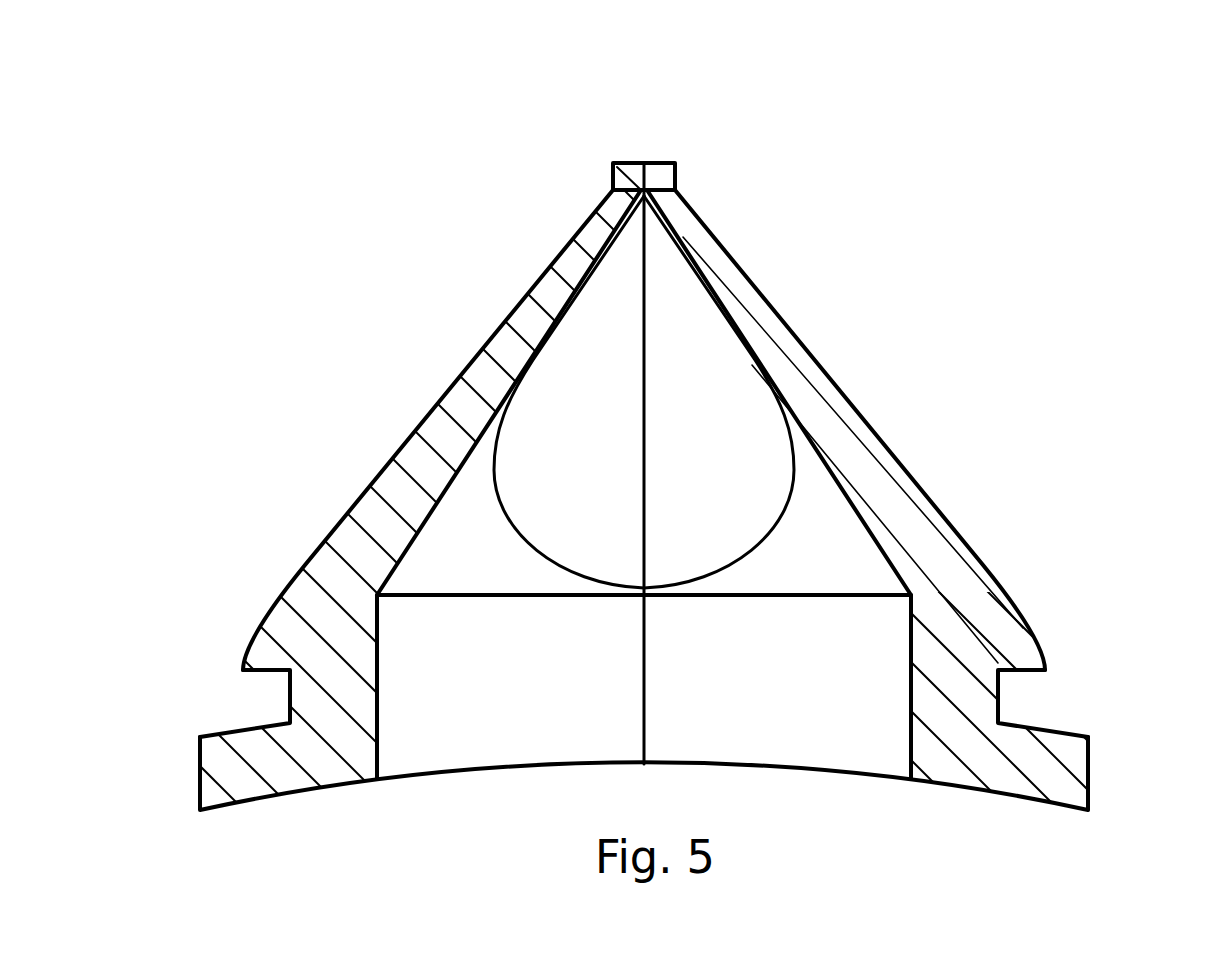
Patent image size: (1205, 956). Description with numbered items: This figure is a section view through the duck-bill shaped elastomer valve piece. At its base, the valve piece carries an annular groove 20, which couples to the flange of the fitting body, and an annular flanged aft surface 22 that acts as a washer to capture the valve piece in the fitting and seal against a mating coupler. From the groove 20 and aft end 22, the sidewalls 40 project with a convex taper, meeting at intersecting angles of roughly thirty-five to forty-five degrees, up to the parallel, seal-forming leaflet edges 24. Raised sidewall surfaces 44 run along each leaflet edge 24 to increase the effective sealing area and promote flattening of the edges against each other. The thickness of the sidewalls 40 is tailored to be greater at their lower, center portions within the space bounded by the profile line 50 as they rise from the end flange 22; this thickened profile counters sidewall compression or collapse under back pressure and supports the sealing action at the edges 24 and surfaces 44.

The annular groove 20 is at (1030, 700).
The aft surface 22 is at (1092, 760).
The leaflet edges 24 is at (630, 163).
The sidewalls 40 is at (458, 413).
The raised sidewall surfaces 44 is at (613, 188).
The profile line 50 is at (570, 555).